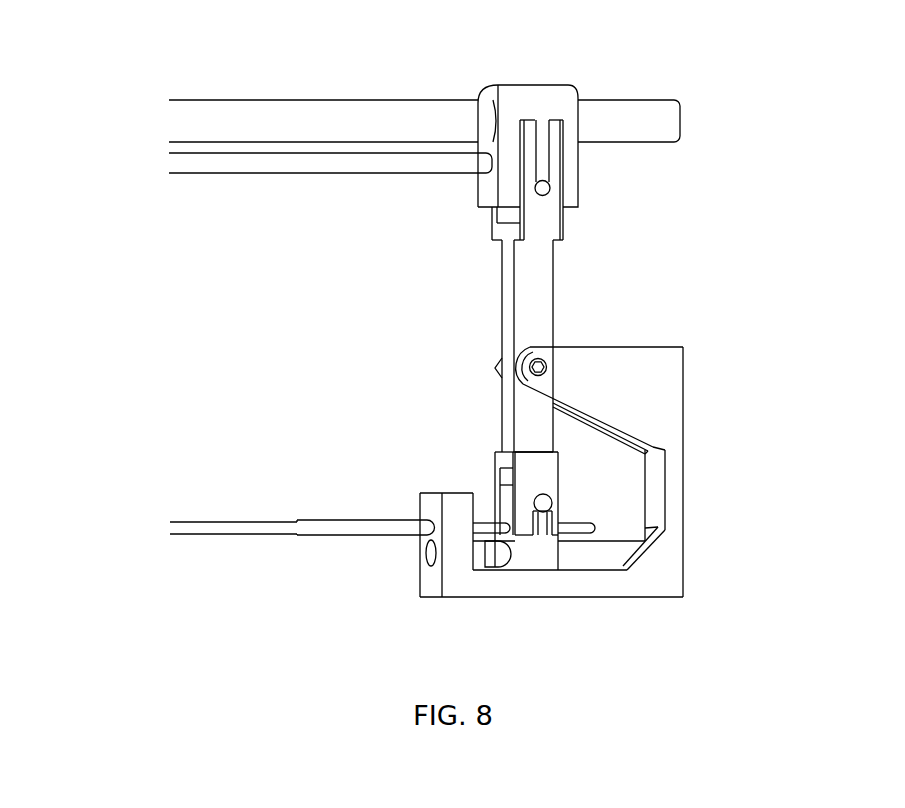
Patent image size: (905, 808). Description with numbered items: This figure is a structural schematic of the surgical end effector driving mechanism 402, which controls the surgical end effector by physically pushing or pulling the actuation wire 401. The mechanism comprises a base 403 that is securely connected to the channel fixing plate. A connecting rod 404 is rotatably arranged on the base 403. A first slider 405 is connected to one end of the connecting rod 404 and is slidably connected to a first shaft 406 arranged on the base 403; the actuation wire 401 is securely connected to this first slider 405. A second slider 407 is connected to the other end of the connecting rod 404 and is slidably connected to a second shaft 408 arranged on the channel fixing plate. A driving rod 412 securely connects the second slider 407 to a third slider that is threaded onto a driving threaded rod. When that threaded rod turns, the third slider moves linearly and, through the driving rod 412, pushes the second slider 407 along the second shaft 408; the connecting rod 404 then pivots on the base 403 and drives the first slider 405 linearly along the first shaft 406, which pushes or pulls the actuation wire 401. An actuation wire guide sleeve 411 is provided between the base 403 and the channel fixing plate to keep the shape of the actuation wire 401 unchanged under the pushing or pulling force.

The actuation wire 401 is at (488, 530).
The surgical end effector driving mechanism 402 is at (670, 429).
The base 403 is at (632, 395).
The connecting rod 404 is at (535, 282).
The first slider 405 is at (537, 548).
The first shaft 406 is at (602, 555).
The second slider 407 is at (530, 108).
The second shaft 408 is at (364, 122).
The actuation wire guide sleeve 411 is at (282, 527).
The driving rod 412 is at (334, 166).